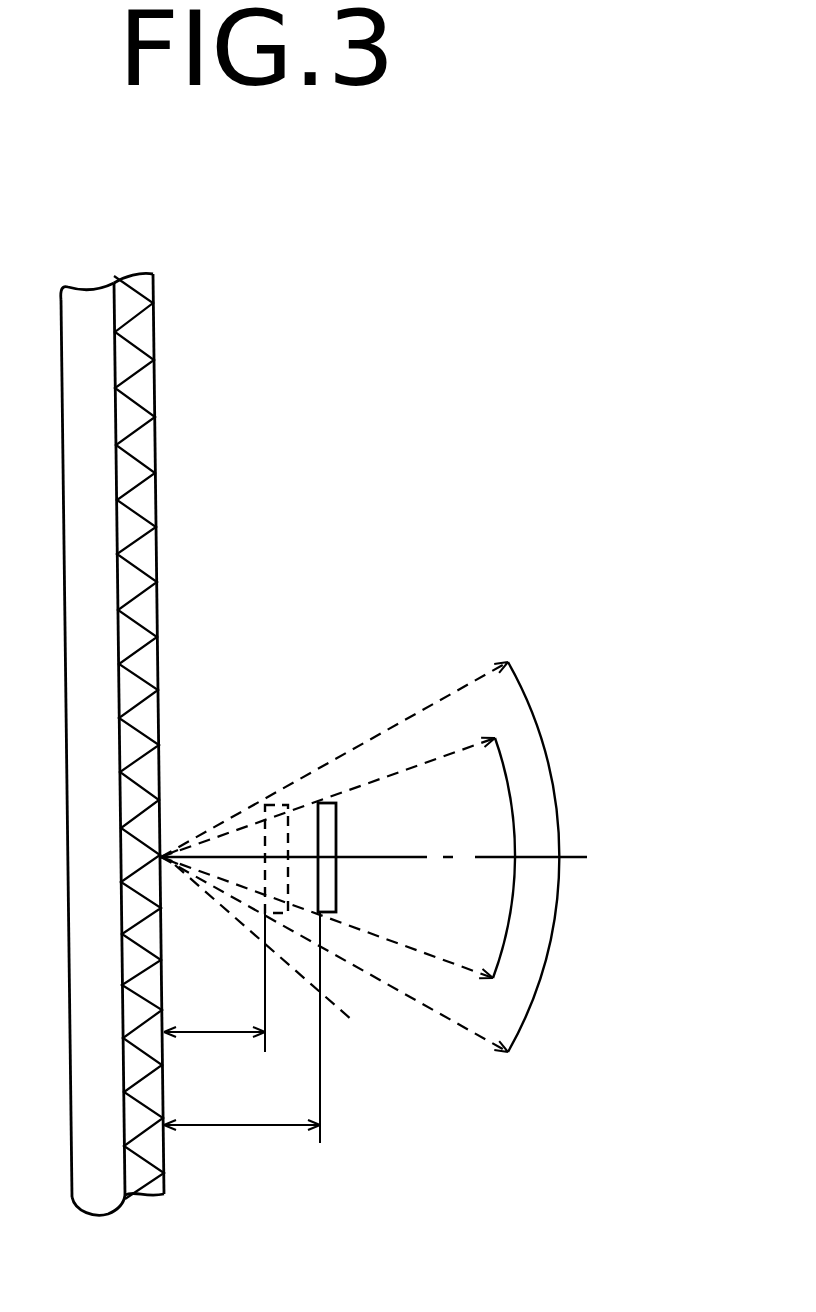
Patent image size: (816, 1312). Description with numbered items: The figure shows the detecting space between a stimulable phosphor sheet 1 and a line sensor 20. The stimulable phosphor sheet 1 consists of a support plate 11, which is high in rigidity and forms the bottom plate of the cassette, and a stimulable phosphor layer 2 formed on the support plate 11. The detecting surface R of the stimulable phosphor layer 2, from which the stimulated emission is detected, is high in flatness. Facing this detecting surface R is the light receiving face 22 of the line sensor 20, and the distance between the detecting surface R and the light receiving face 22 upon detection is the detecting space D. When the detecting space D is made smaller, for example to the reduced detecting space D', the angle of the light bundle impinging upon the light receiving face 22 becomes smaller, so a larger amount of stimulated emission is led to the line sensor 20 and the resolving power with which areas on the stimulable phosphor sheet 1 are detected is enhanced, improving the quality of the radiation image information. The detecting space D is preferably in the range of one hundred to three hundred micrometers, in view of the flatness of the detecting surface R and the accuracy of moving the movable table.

The stimulable phosphor sheet 1 is at (211, 738).
The support plate 11 is at (98, 413).
The stimulable phosphor layer 2 is at (143, 440).
The detecting surface R is at (155, 493).
The line sensor 20 is at (175, 848).
The light receiving face 22 is at (315, 898).
The detecting space D is at (242, 1027).
The reduced detecting space D' is at (214, 982).